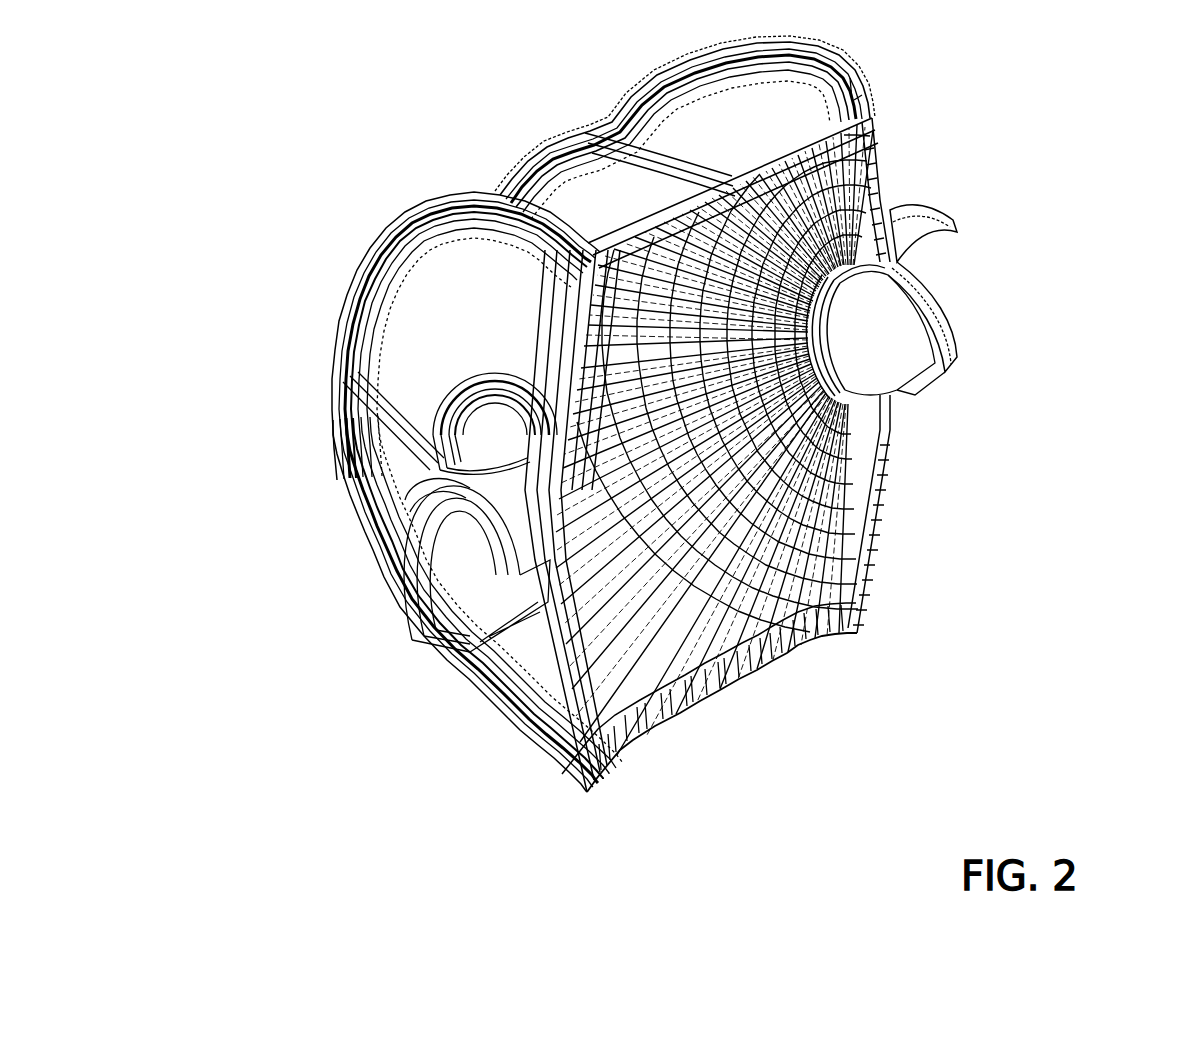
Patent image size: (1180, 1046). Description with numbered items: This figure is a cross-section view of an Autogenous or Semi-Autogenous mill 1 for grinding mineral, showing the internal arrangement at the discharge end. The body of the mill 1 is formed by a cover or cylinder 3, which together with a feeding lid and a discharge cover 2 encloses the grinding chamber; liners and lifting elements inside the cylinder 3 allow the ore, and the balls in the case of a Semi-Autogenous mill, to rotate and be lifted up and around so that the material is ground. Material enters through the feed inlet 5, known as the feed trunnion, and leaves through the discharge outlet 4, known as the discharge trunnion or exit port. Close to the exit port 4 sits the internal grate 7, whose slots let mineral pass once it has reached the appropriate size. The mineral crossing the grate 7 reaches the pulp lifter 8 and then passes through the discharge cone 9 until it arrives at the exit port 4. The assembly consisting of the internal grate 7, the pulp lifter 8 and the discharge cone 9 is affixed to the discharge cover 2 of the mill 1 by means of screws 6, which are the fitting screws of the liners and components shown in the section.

The mill 1 is at (387, 172).
The discharge cover 2 is at (487, 660).
The cover or cylinder 3 is at (547, 173).
The discharge outlet 4 is at (463, 563).
The feed inlet 5 is at (985, 270).
The screws 6 is at (513, 341).
The internal grate 7 is at (578, 603).
The pulp lifter 8 is at (540, 597).
The discharge cone 9 is at (563, 605).